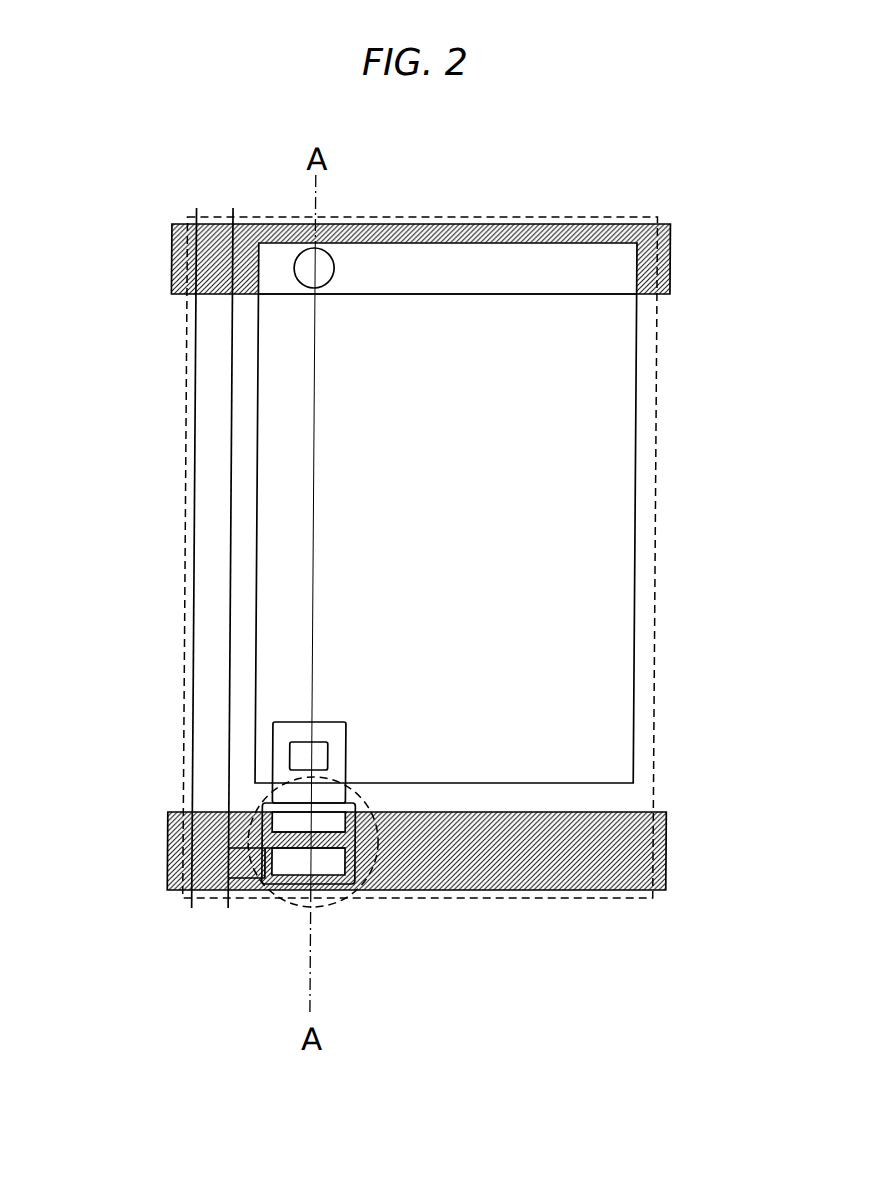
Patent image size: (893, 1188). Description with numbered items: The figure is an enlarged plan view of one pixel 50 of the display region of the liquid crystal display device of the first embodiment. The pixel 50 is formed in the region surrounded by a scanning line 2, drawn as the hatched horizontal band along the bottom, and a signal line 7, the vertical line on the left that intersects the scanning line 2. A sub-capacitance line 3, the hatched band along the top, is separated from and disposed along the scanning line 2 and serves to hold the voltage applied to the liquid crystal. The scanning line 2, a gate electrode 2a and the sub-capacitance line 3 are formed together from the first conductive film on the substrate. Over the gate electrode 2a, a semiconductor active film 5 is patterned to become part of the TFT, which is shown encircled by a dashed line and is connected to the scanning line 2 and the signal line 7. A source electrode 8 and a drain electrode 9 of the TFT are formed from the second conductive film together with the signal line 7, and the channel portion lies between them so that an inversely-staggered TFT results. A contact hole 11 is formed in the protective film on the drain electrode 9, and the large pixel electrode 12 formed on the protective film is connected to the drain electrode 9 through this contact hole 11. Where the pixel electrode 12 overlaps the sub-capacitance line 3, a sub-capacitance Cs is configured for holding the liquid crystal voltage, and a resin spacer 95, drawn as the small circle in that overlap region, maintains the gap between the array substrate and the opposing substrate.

The scanning line 2 is at (526, 862).
The gate electrode 2a is at (333, 888).
The sub-capacitance line 3 is at (647, 258).
The semiconductor active film 5 is at (353, 842).
The signal line 7 is at (216, 540).
The source electrode 8 is at (296, 862).
The drain electrode 9 is at (301, 792).
The contact hole 11 is at (305, 752).
The pixel electrode 12 is at (544, 548).
The pixel 50 is at (188, 895).
The resin spacer 95 is at (326, 246).
The sub-capacitance Cs is at (432, 265).
The element TFT is at (376, 853).